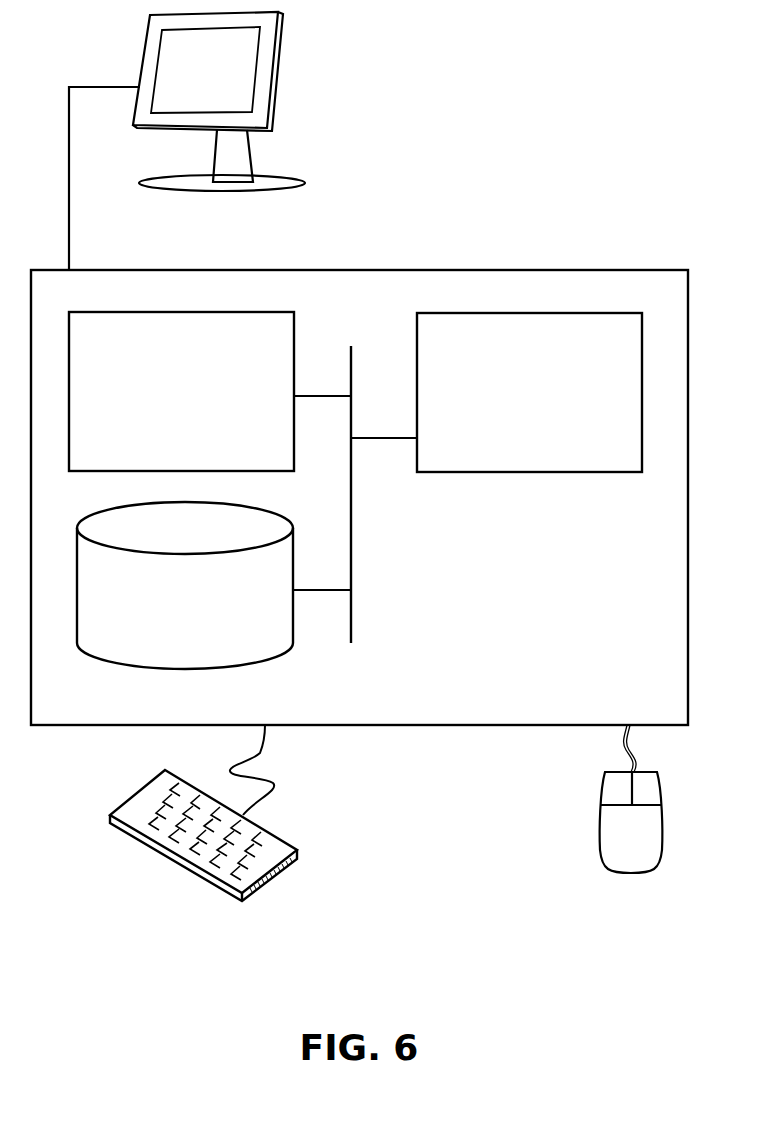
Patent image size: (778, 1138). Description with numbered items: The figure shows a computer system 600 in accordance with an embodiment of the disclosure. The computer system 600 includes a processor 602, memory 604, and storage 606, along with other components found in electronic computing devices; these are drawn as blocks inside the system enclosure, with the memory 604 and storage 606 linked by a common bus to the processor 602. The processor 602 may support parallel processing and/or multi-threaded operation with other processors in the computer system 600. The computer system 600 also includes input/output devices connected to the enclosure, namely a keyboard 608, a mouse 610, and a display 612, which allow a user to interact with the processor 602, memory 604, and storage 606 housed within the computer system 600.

The computer system 600 is at (405, 238).
The processor 602 is at (512, 404).
The memory 604 is at (162, 403).
The storage 606 is at (169, 616).
The keyboard 608 is at (130, 835).
The mouse 610 is at (610, 846).
The display 612 is at (187, 141).